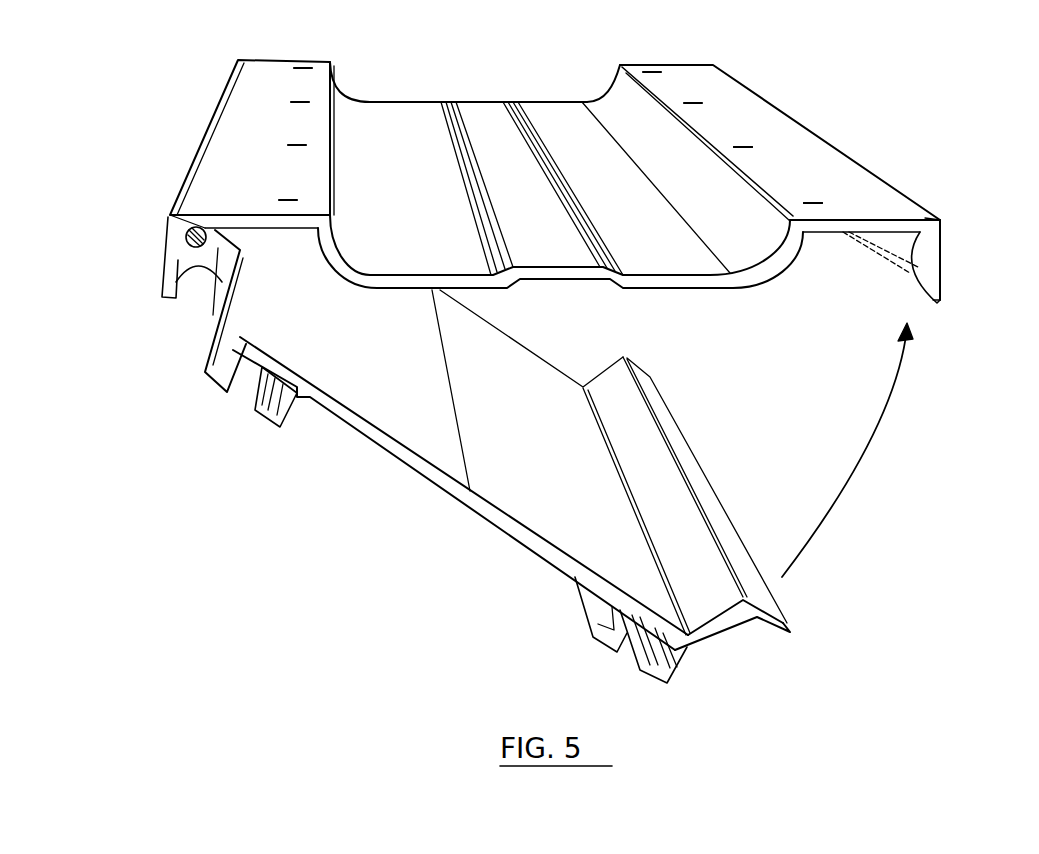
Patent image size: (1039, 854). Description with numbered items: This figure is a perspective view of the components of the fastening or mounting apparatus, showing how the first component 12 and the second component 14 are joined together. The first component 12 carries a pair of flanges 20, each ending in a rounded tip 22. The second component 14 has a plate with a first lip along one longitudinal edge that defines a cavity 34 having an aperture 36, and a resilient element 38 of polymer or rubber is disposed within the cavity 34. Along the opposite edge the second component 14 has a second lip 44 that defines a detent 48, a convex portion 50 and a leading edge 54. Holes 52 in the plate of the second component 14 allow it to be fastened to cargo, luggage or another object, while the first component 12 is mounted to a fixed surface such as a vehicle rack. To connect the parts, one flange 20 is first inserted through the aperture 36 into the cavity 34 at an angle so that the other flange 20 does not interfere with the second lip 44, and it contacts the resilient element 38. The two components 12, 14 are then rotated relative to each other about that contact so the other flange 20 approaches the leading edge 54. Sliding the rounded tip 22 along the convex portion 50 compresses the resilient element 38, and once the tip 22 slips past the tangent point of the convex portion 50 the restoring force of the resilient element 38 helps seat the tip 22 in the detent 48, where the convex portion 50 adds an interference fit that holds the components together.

The first component 12 is at (438, 482).
The second component 14 is at (488, 112).
The flange 20 is at (227, 273).
The tip 22 is at (220, 230).
The cavity 34 is at (180, 220).
The aperture 36 is at (205, 227).
The resilient element 38 is at (185, 242).
The second lip 44 is at (933, 267).
The detent 48 is at (930, 220).
The convex portion 50 is at (913, 268).
The holes 52 is at (733, 147).
The leading edge 54 is at (937, 303).